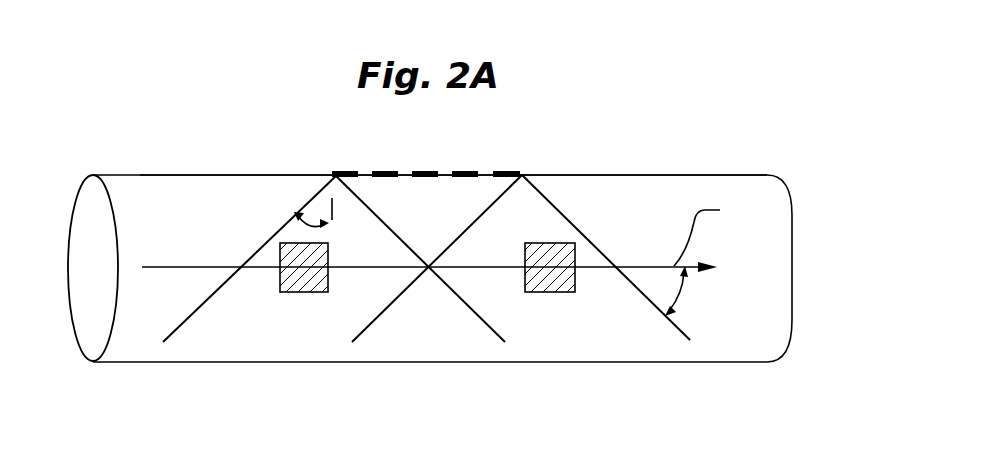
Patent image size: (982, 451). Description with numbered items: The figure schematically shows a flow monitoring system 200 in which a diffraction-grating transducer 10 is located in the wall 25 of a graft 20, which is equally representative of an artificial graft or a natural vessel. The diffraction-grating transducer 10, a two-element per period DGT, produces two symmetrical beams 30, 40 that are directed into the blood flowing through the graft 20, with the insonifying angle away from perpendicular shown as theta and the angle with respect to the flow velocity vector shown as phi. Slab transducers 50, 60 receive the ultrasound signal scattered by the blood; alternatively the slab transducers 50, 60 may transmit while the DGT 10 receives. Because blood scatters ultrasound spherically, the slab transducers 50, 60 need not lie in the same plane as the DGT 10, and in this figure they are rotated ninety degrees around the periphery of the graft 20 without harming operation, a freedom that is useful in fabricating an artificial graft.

The flow monitoring system 200 is at (227, 115).
The graft 20 is at (790, 197).
The wall 25 is at (610, 175).
The diffraction-grating transducer 10 is at (430, 175).
The first beam 30 is at (322, 326).
The second beam 40 is at (563, 338).
The first slab transducer 50 is at (298, 266).
The second slab transducer 60 is at (552, 270).